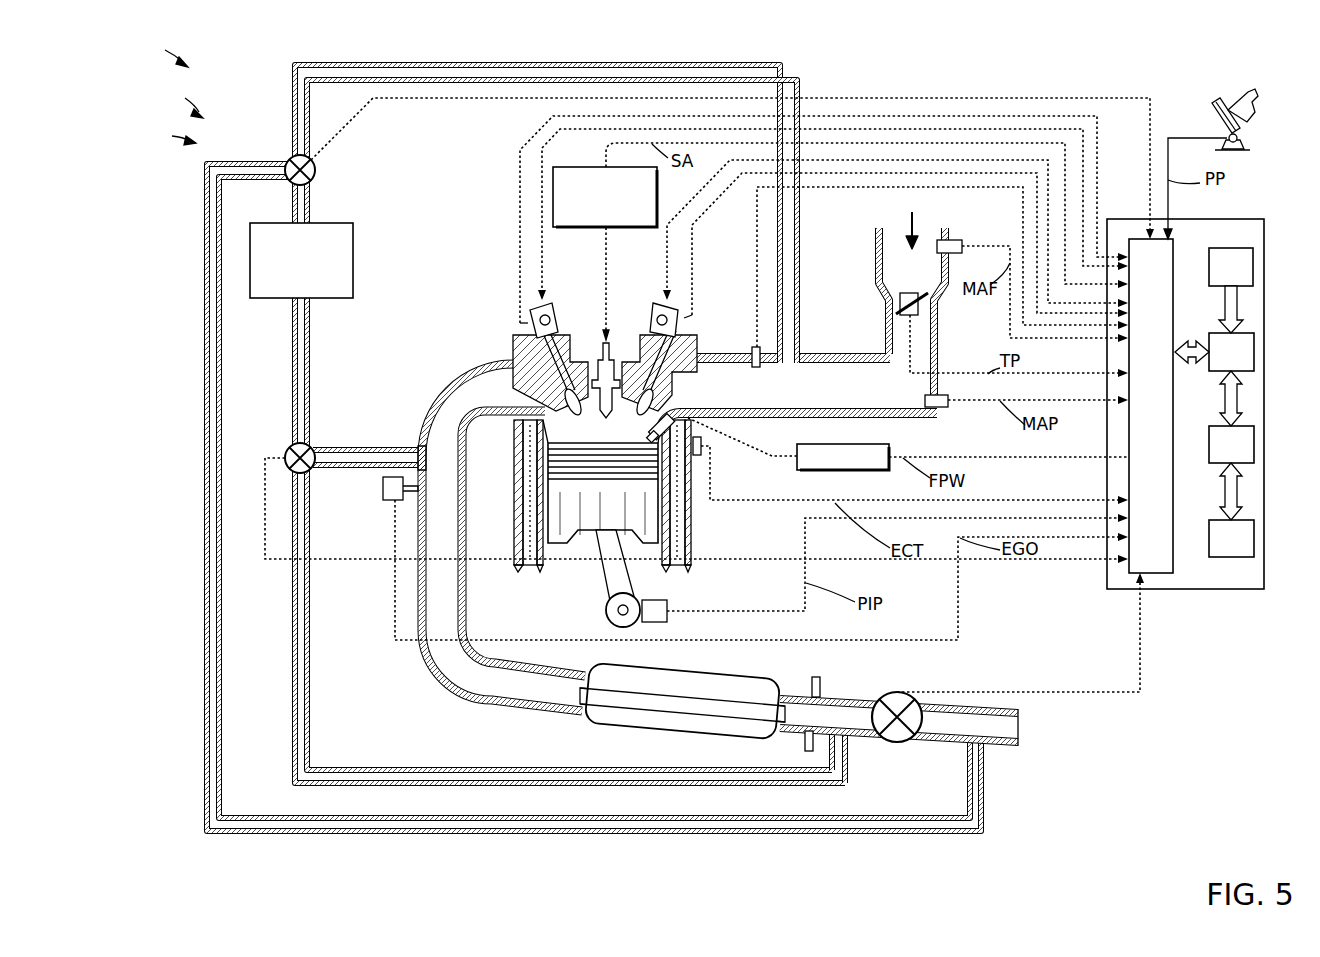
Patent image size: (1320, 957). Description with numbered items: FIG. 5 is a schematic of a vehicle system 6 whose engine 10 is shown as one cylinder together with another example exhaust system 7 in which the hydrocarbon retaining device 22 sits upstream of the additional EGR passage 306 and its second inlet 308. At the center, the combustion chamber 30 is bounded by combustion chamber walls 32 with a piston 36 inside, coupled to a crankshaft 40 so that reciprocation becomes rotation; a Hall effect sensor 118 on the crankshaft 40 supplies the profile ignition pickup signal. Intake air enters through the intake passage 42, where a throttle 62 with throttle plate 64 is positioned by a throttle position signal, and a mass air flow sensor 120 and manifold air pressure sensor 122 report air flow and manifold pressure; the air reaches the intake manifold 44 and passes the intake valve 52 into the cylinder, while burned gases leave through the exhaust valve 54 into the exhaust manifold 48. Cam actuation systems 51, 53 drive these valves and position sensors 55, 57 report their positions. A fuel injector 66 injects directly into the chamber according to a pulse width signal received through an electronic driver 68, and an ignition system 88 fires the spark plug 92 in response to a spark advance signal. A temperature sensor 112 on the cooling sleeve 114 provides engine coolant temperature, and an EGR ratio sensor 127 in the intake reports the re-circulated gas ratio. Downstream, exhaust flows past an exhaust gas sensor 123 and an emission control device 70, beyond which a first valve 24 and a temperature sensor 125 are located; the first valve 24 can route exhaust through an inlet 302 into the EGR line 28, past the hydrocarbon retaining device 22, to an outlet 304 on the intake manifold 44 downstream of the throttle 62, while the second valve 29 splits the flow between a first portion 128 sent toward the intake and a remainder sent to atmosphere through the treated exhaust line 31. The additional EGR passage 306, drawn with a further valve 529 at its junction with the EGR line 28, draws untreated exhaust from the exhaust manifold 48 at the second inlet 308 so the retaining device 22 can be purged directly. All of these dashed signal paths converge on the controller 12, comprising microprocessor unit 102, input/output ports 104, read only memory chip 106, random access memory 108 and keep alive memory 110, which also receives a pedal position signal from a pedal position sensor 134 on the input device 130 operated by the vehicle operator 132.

The vehicle system 6 is at (169, 54).
The engine 10 is at (180, 103).
The exhaust system 7 is at (176, 136).
The controller 12 is at (1264, 226).
The hydrocarbon retaining device 22 is at (320, 223).
The first valve 24 is at (888, 692).
The EGR line 28 is at (363, 73).
The second valve 29 is at (288, 187).
The combustion chamber 30 is at (598, 432).
The treated exhaust line 31 is at (437, 826).
The combustion chamber walls 32 is at (550, 552).
The piston 36 is at (587, 552).
The crankshaft 40 is at (606, 614).
The intake passage 42 is at (898, 276).
The intake manifold 44 is at (840, 398).
The exhaust manifold 48 is at (473, 400).
The cam actuation system 51 is at (655, 300).
The intake valve 52 is at (650, 398).
The cam actuation system 53 is at (556, 300).
The exhaust valve 54 is at (565, 398).
The position sensor 55 is at (688, 330).
The position sensor 57 is at (530, 325).
The throttle 62 is at (920, 300).
The throttle plate 64 is at (897, 298).
The fuel injector 66 is at (722, 440).
The electronic driver 68 is at (822, 471).
The emission control device 70 is at (745, 676).
The ignition system 88 is at (567, 167).
The spark plug 92 is at (609, 345).
The microprocessor unit 102 is at (1255, 350).
The input/output ports 104 is at (1175, 252).
The read only memory chip 106 is at (1254, 267).
The random access memory 108 is at (1255, 442).
The keep alive memory 110 is at (1255, 535).
The temperature sensor 112 is at (712, 458).
The cooling sleeve 114 is at (677, 518).
The Hall effect sensor 118 is at (653, 600).
The mass air flow sensor 120 is at (958, 240).
The manifold air pressure sensor 122 is at (943, 412).
The exhaust gas sensor 123 is at (388, 501).
The temperature sensor 125 is at (804, 749).
The EGR ratio sensor 127 is at (753, 348).
The first portion of exhaust gases 128 is at (820, 678).
The input device 130 is at (1222, 113).
The vehicle operator 132 is at (1265, 105).
The pedal position sensor 134 is at (1246, 146).
The inlet 302 is at (838, 728).
The outlet 304 is at (795, 361).
The additional EGR passage 306 is at (356, 468).
The second inlet 308 is at (420, 440).
The valve 529 is at (289, 450).